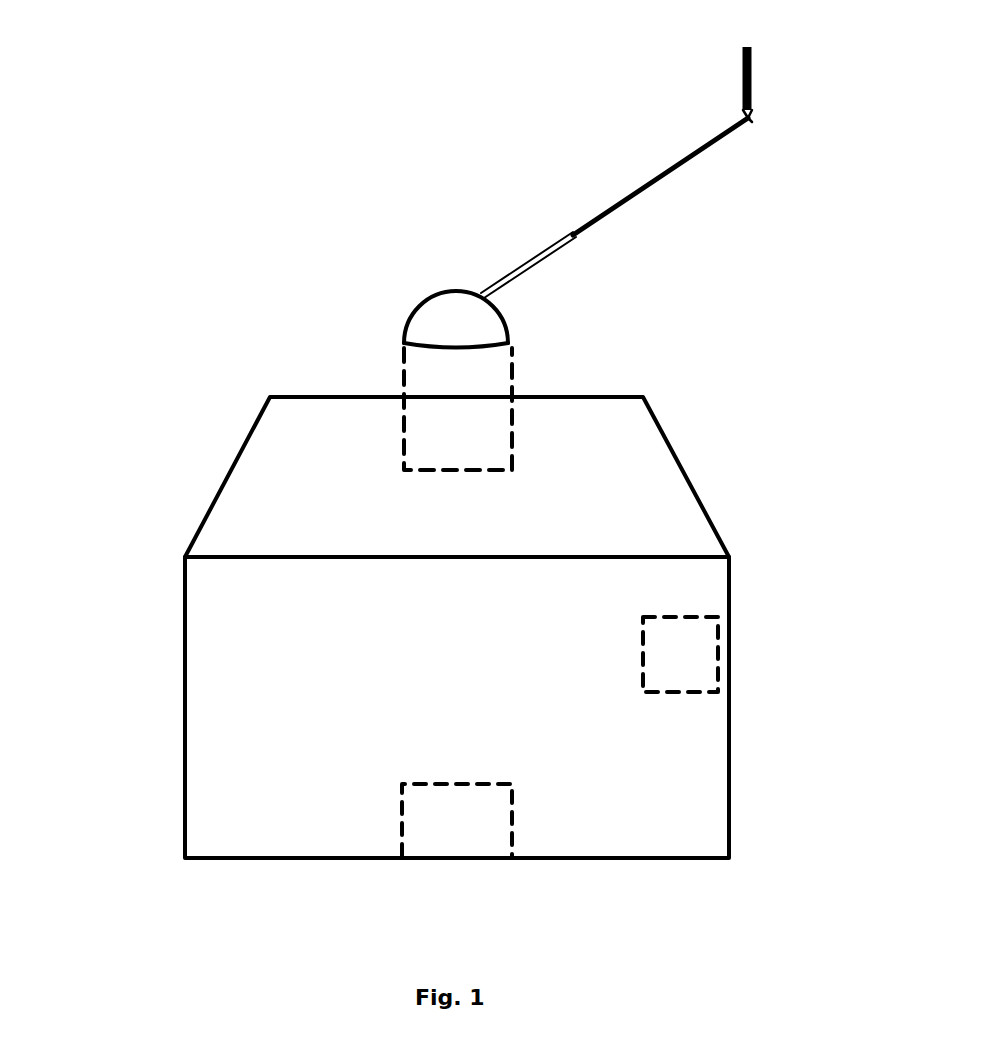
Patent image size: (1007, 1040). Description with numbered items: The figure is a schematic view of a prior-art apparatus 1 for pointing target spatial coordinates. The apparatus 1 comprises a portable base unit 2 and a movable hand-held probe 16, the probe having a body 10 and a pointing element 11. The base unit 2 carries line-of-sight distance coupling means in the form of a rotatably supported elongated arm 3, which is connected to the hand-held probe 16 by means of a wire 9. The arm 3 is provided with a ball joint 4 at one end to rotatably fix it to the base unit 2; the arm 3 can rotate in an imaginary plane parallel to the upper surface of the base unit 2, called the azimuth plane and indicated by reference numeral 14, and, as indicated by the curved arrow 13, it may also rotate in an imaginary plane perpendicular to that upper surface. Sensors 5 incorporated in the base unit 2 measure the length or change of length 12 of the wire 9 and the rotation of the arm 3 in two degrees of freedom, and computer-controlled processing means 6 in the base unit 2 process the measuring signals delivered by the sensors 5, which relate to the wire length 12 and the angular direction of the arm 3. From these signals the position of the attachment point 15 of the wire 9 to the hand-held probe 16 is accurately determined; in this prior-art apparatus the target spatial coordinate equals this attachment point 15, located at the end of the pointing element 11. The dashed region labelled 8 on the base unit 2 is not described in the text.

The apparatus 1 is at (128, 215).
The portable base unit 2 is at (670, 495).
The rotatably supported elongated arm 3 is at (568, 257).
The ball joint 4 is at (437, 318).
The sensors 5 is at (430, 440).
The computer-controlled processing means 6 is at (448, 840).
The control unit (dashed) 8 is at (680, 655).
The wire 9 is at (678, 180).
The body 10 is at (754, 62).
The pointing element 11 is at (751, 110).
The length or change of length of the wire 12 is at (580, 203).
The curved arrow 13 is at (296, 318).
The azimuth plane rotation 14 is at (460, 260).
The attachment point 15 is at (751, 123).
The movable hand-held probe 16 is at (716, 70).